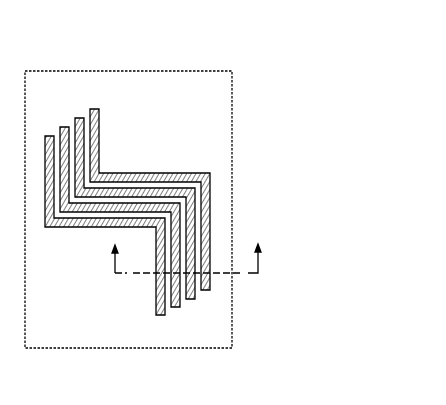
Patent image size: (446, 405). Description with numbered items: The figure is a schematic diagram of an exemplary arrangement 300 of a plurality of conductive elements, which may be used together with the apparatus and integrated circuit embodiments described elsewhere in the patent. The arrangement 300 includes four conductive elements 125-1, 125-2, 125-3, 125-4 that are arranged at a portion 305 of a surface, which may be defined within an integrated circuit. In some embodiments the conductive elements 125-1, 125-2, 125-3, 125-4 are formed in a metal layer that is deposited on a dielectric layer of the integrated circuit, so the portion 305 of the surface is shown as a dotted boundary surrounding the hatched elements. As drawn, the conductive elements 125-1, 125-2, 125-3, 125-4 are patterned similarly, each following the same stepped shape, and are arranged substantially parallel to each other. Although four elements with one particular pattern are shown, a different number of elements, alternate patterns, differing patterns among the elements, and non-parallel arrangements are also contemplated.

The arrangement 300 is at (200, 41).
The portion of a surface 305 is at (232, 123).
The conductive element 125-1 is at (62, 227).
The conductive element 125-2 is at (175, 308).
The conductive element 125-3 is at (191, 299).
The conductive element 125-4 is at (99, 128).